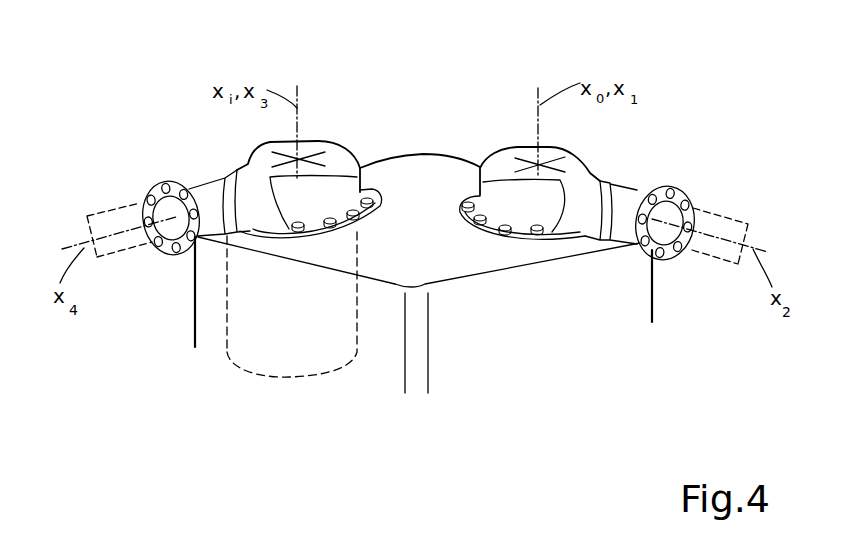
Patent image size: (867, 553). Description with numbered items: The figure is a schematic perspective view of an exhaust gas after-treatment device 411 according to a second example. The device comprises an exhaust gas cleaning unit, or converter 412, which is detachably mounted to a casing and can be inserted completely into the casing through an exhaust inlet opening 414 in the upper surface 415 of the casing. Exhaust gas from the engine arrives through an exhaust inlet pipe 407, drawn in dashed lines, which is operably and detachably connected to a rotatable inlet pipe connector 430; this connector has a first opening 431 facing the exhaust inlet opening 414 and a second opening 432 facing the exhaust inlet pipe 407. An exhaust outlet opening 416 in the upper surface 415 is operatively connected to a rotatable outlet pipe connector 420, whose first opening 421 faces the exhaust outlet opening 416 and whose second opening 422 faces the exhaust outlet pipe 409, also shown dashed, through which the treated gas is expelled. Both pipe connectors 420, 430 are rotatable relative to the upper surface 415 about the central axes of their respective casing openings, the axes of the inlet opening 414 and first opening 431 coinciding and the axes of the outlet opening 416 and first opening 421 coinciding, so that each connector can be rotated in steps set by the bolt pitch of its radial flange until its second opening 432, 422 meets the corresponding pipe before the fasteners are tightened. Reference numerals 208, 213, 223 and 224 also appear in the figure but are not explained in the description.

The first bolted flange ring 208 is at (183, 187).
The exhaust inlet pipe 407 is at (128, 208).
The second opening 432 is at (125, 243).
The rotatable inlet pipe connector 430 is at (184, 132).
The exhaust gas after-treatment device 411 is at (308, 88).
The first opening 431 is at (388, 230).
The upper surface 415 is at (420, 177).
The exhaust inlet opening 414 is at (288, 243).
The exhaust outlet opening 416 is at (556, 255).
The exhaust gas cleaning unit 412 is at (258, 332).
The rotatable outlet pipe connector 420 is at (630, 146).
The first opening 421 is at (457, 241).
The bolt 224 is at (507, 236).
The bolt 223 is at (538, 236).
The second opening 422 is at (670, 220).
The exhaust outlet pipe 409 is at (730, 223).
The second axle line 213 is at (636, 285).